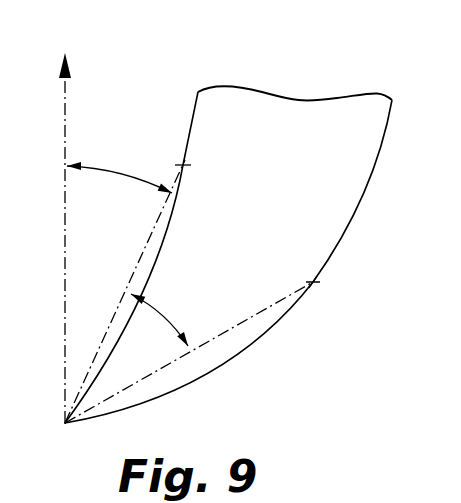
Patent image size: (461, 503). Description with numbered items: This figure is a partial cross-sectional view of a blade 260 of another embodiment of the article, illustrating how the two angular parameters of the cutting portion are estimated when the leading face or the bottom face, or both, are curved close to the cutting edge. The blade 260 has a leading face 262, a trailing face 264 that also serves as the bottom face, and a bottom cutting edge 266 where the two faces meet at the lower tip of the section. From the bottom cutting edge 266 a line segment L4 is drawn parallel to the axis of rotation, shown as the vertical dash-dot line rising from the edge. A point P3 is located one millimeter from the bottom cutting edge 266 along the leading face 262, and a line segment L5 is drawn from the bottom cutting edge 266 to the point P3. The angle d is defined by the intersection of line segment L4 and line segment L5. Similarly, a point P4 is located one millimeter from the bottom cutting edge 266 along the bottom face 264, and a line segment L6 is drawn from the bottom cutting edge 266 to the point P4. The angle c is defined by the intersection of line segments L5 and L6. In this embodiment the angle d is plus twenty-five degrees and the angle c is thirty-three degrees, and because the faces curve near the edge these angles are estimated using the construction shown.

The blade 260 is at (231, 222).
The leading face 262 is at (195, 110).
The trailing face 264 is at (287, 315).
The bottom cutting edge 266 is at (65, 423).
The line segment L4 is at (64, 329).
The line segment L5 is at (152, 236).
The line segment L6 is at (262, 310).
The point P3 is at (190, 163).
The point P4 is at (317, 285).
The angle c is at (167, 310).
The angle d is at (117, 170).